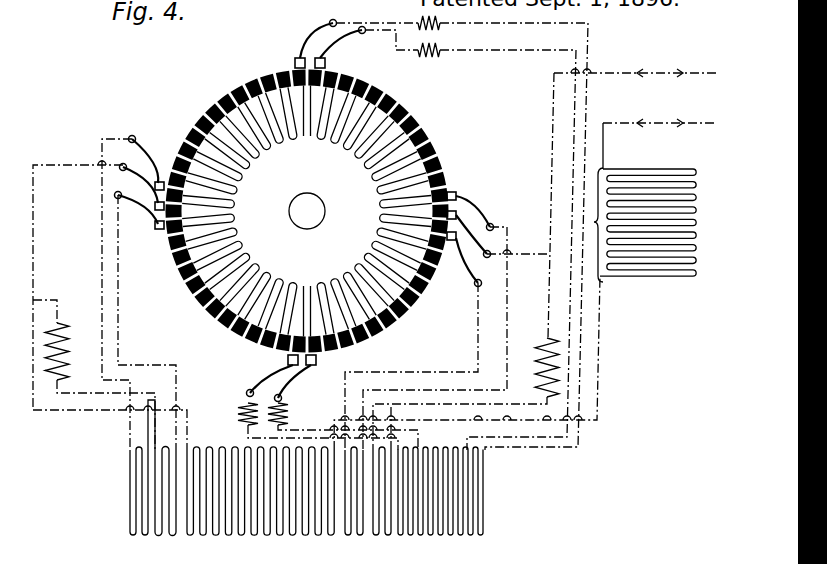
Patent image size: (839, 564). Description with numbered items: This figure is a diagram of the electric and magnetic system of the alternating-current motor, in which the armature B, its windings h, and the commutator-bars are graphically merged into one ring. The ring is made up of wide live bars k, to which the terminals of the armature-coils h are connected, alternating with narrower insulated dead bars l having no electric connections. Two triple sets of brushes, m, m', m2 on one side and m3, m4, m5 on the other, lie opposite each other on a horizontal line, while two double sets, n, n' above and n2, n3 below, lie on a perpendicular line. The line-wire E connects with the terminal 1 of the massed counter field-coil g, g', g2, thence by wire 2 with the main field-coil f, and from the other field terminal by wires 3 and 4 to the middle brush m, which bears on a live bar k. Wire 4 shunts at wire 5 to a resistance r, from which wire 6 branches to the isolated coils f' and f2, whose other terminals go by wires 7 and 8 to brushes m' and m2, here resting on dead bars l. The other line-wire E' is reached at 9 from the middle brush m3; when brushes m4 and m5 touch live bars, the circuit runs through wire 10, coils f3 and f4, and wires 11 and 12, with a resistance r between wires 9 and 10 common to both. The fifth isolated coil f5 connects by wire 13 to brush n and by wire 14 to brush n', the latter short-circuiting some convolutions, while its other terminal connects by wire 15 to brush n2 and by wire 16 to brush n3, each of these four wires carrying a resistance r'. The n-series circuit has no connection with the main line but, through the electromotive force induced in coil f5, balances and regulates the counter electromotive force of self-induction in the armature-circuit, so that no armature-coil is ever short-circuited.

The live commutator-bar k is at (314, 208).
The dead bar l is at (307, 204).
The armature winding h is at (376, 214).
The armature B is at (315, 202).
The brush n is at (310, 44).
The brush n' is at (336, 43).
The brush n2 is at (288, 360).
The brush n3 is at (317, 360).
The middle brush m is at (142, 187).
The brush m' is at (140, 221).
The brush m2 is at (153, 184).
The middle brush m3 is at (469, 234).
The brush m4 is at (459, 259).
The brush m5 is at (470, 208).
The resistance r is at (302, 360).
The resistance r' is at (330, 220).
The line-wire E is at (659, 113).
The line-wire E' is at (636, 64).
The counter field-coil g' is at (639, 225).
The counter field-coil g is at (639, 226).
The counter field-coil g2 is at (639, 256).
The isolated coil f' is at (133, 467).
The isolated coil f2 is at (165, 491).
The main field-coil f is at (260, 491).
The isolated coil f3 is at (352, 491).
The isolated coil f4 is at (380, 491).
The isolated coil f5 is at (440, 491).
The terminal 1 is at (608, 146).
The wire 2 is at (465, 363).
The wire 3 is at (116, 427).
The wire 4 is at (69, 279).
The wire 5 is at (45, 304).
The wire 6 is at (106, 415).
The wire 7 is at (154, 322).
The wire 8 is at (113, 294).
The wire 9 is at (523, 205).
The wire 10 is at (460, 423).
The wire 11 is at (411, 366).
The wire 12 is at (444, 338).
The wire 13 is at (462, 234).
The wire 14 is at (470, 240).
The wire 15 is at (323, 437).
The wire 16 is at (357, 433).